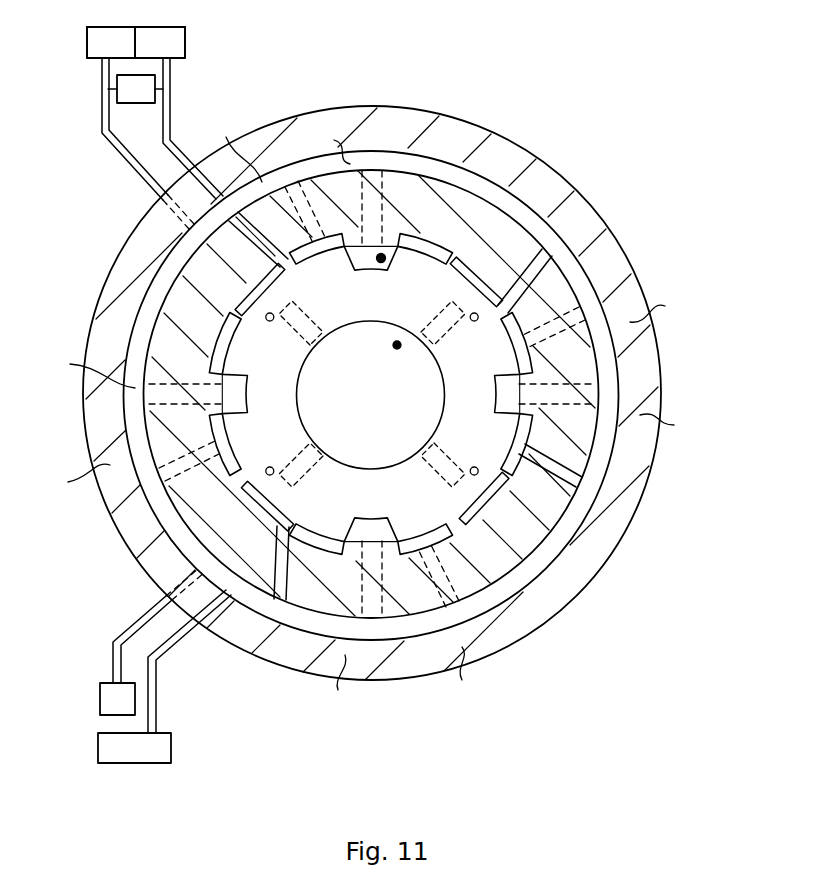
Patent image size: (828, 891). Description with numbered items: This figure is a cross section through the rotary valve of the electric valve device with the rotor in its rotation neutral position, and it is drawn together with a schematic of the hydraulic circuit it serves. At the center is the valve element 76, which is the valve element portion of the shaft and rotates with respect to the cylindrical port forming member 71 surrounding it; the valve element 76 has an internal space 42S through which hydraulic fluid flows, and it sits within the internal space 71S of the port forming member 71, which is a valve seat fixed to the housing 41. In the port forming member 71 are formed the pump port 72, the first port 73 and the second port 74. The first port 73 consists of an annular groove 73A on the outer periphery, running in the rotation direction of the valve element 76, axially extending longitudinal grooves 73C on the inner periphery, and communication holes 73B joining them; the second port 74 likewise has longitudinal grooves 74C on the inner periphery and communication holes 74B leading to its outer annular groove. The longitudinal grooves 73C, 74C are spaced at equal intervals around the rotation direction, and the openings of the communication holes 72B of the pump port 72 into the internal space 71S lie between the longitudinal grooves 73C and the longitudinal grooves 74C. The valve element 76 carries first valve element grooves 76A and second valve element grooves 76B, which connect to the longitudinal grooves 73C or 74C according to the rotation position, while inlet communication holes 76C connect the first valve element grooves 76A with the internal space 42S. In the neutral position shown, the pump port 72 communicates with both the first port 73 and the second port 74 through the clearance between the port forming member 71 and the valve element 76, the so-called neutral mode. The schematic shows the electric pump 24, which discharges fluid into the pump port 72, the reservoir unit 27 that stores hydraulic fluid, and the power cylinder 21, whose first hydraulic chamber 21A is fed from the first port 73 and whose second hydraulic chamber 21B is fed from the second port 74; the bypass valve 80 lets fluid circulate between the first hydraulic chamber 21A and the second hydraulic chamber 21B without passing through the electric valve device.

The power cylinder 21 is at (187, 41).
The first hydraulic chamber 21A is at (179, 113).
The second hydraulic chamber 21B is at (127, 113).
The bypass valve 80 is at (135, 89).
The electric pump 24 is at (136, 655).
The reservoir unit 27 is at (164, 676).
The housing 41 is at (560, 606).
The internal space 42S is at (398, 342).
The port forming member 71 is at (598, 566).
The internal space 71S is at (384, 255).
The pump port 72 is at (394, 150).
The communication holes 72B is at (373, 415).
The first port 73 is at (500, 158).
The annular groove 73A is at (556, 178).
The communication holes 73B is at (455, 178).
The longitudinal grooves 73C is at (462, 260).
The second port 74 is at (296, 120).
The communication holes 74B is at (369, 408).
The longitudinal grooves 74C is at (280, 264).
The valve element 76 is at (374, 468).
The first valve element grooves 76A is at (268, 322).
The second valve element grooves 76B is at (375, 268).
The inlet communication holes 76C is at (303, 350).